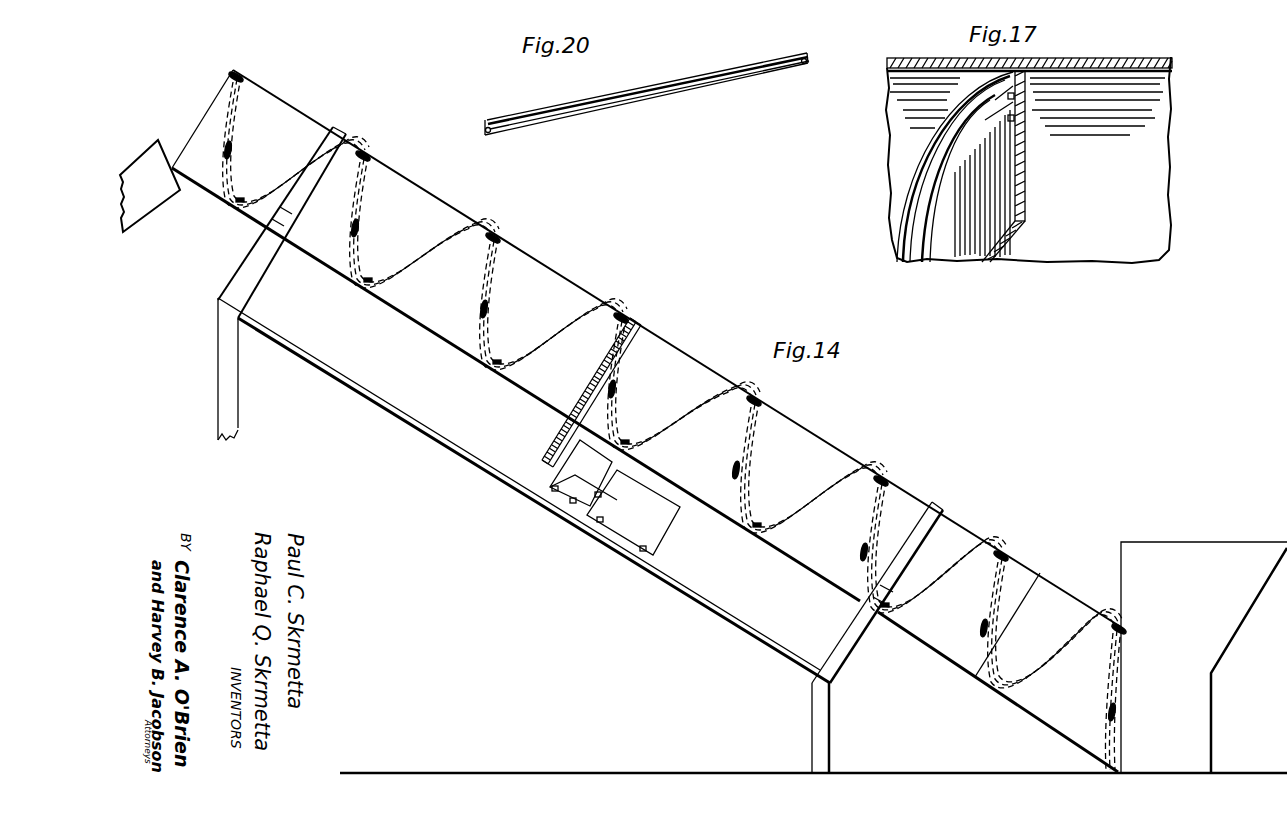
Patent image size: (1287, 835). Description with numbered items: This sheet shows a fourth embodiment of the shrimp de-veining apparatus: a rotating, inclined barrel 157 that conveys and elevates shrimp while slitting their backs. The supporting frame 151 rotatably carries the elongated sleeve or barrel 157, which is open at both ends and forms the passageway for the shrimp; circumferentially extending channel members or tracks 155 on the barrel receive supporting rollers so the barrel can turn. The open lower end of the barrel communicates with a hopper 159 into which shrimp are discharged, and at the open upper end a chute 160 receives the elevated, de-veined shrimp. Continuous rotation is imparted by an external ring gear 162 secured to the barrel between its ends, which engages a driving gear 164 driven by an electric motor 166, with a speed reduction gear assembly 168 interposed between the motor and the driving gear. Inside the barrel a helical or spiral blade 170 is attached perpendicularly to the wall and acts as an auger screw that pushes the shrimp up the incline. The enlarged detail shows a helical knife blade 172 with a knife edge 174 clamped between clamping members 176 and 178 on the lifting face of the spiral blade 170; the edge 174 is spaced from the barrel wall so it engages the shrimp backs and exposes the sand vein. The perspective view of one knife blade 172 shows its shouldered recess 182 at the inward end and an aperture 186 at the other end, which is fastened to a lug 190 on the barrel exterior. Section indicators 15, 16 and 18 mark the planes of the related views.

In FIG. 14, the section line for Fig. 15 is at (203, 118).
In FIG. 14, the section line for Fig. 16 is at (457, 392).
In FIG. 14, the view direction for Fig. 18 is at (385, 202).
In FIG. 14, the supporting frame 151 is at (853, 665).
In FIG. 14, the channel members or tracks 155 is at (335, 127).
In FIG. 14, the sleeve or barrel 157 is at (906, 507).
In FIG. 17, the sleeve or barrel 157 is at (1125, 58).
In FIG. 14, the hopper 159 is at (1218, 657).
In FIG. 14, the chute 160 is at (162, 188).
In FIG. 14, the external ring gear 162 is at (645, 325).
In FIG. 14, the driving gear 164 is at (553, 442).
In FIG. 14, the electric motor 166 is at (653, 513).
In FIG. 14, the speed reduction gear assembly 168 is at (575, 475).
In FIG. 14, the helical or spiral blade 170 is at (583, 310).
In FIG. 17, the helical or spiral blade 170 is at (1023, 182).
In FIG. 20, the knife blade 172 is at (663, 92).
In FIG. 17, the knife blade 172 is at (1010, 90).
In FIG. 20, the knife edge 174 is at (620, 92).
In FIG. 17, the knife edge 174 is at (990, 110).
In FIG. 17, the clamping member 176 is at (1020, 98).
In FIG. 17, the clamping member 178 is at (1020, 123).
In FIG. 20, the shouldered recess 182 is at (485, 123).
In FIG. 20, the aperture 186 is at (808, 58).
In FIG. 14, the lug 190 is at (503, 247).